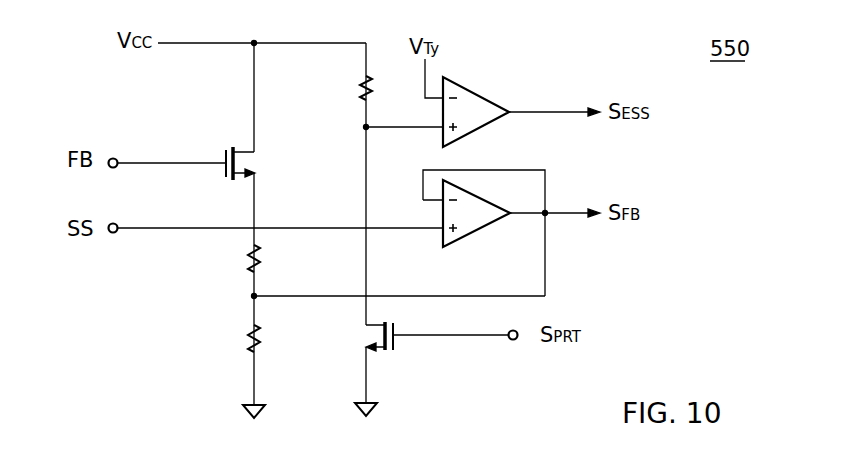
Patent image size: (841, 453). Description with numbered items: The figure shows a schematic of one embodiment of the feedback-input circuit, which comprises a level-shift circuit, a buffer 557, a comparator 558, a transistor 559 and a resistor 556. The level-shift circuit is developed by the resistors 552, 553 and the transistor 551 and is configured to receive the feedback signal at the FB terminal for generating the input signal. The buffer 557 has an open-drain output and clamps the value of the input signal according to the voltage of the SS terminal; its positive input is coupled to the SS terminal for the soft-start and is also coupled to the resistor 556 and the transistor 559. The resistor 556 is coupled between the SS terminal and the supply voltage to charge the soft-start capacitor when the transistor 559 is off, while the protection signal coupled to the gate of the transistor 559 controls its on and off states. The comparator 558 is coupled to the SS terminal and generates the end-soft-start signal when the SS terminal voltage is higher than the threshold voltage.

The transistor 551 is at (222, 147).
The resistor 552 is at (244, 262).
The resistor 553 is at (244, 340).
The resistor 556 is at (352, 86).
The buffer 557 is at (473, 236).
The comparator 558 is at (493, 99).
The transistor 559 is at (398, 353).